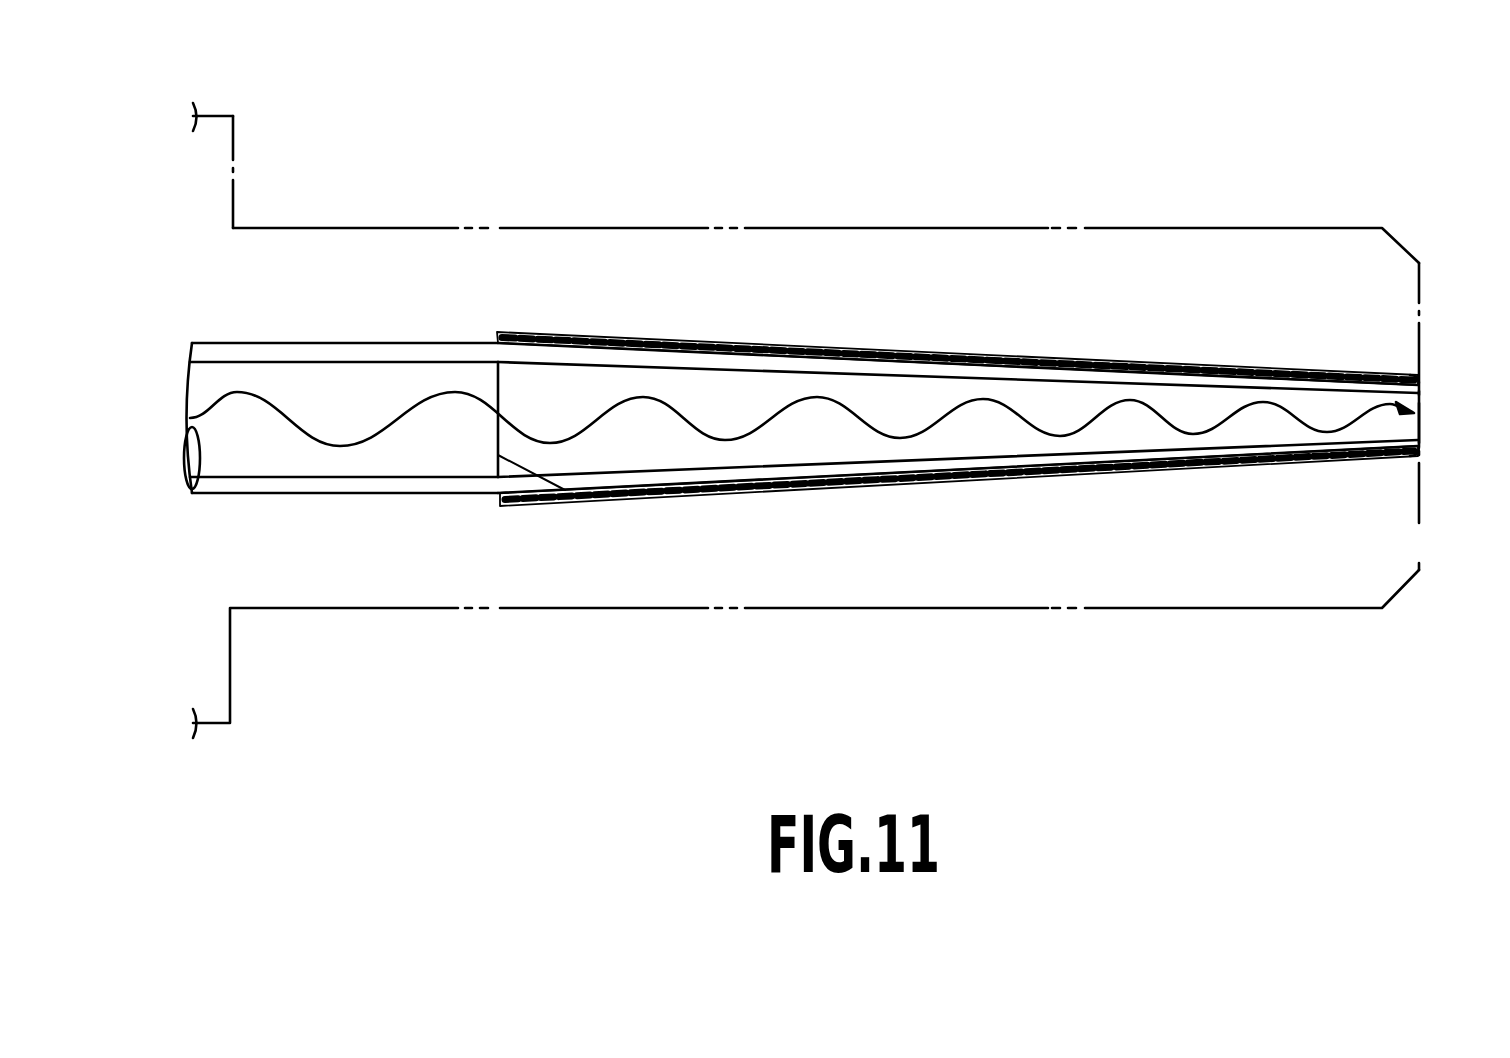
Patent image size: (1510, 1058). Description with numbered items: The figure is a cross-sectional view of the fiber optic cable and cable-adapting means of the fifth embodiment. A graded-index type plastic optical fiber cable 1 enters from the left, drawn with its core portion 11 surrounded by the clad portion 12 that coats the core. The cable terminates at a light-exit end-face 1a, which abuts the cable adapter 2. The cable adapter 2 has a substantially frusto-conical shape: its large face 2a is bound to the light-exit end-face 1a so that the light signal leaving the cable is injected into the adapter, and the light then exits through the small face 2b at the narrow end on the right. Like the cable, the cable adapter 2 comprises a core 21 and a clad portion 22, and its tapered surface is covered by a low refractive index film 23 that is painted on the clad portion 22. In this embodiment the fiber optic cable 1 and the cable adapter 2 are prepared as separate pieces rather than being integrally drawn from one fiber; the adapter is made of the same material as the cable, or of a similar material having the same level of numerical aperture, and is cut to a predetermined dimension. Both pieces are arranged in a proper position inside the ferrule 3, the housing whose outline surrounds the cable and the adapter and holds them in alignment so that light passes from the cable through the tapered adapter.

The plastic optical fiber cable 1 is at (341, 476).
The light-exit end-face 1a is at (498, 390).
The core portion 11 is at (265, 462).
The clad portion 12 is at (404, 487).
The cable adapter 2 is at (999, 482).
The large face 2a is at (565, 490).
The small face 2b is at (1420, 420).
The core 21 is at (983, 437).
The clad portion 22 is at (855, 468).
The low refractive index film 23 is at (766, 340).
The ferrule 3 is at (880, 228).